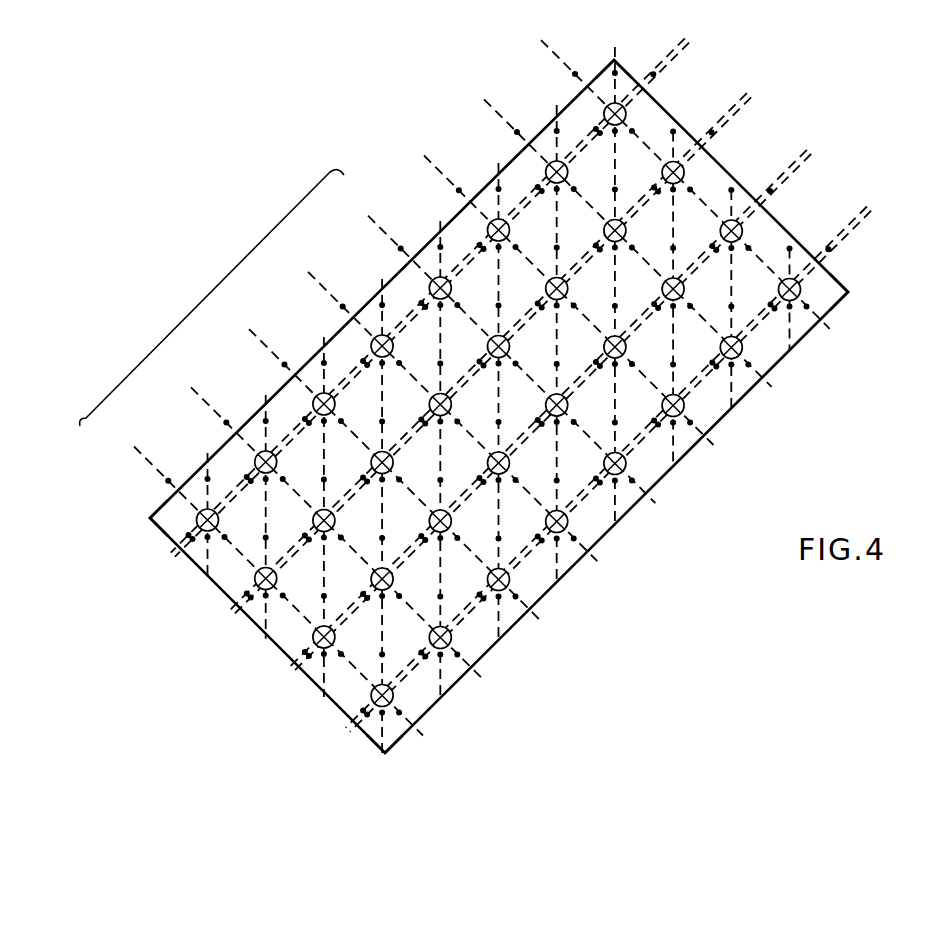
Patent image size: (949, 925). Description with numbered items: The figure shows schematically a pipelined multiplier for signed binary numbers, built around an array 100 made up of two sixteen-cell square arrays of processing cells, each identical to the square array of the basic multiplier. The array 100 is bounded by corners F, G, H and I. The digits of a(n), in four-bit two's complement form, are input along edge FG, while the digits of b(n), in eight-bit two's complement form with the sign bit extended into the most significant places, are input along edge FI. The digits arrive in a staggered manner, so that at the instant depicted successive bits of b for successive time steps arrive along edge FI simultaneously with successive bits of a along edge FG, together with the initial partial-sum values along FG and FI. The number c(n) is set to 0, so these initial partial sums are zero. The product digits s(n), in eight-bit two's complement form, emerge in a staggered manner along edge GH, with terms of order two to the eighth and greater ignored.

The array 100 is at (358, 116).
The c(n) input value 0 is at (522, 387).
The corner F of array F is at (614, 67).
The corner G of array G is at (847, 292).
The corner H of array H is at (385, 760).
The corner I of array I is at (150, 518).